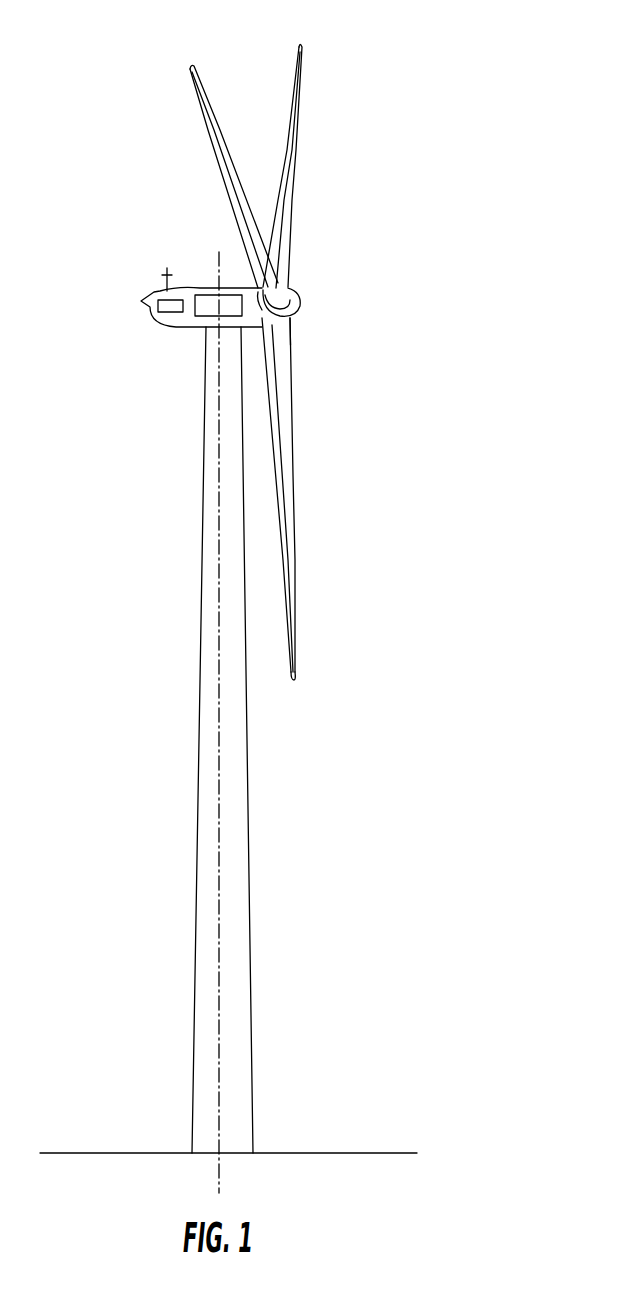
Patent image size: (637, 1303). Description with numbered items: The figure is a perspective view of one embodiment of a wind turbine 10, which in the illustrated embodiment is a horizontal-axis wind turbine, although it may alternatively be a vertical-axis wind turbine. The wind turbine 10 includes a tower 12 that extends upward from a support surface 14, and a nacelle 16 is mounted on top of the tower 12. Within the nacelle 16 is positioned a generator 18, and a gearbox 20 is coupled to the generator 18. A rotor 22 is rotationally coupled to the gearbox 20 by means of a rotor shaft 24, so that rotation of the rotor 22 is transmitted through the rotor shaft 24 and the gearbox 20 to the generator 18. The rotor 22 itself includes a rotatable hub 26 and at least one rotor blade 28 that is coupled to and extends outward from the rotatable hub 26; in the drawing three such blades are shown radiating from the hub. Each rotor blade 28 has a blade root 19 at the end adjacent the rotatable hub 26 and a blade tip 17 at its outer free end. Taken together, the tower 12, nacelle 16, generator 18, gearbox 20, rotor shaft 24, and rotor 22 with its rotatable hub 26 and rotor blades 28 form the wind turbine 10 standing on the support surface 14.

The wind turbine 10 is at (442, 94).
The tower 12 is at (197, 868).
The support surface 14 is at (118, 1152).
The nacelle 16 is at (158, 330).
The blade tip 17 is at (295, 681).
The generator 18 is at (158, 290).
The blade root 19 is at (289, 341).
The gearbox 20 is at (203, 291).
The rotor 22 is at (308, 274).
The rotor shaft 24 is at (250, 305).
The rotatable hub 26 is at (293, 313).
The rotor blade 28 is at (209, 133).